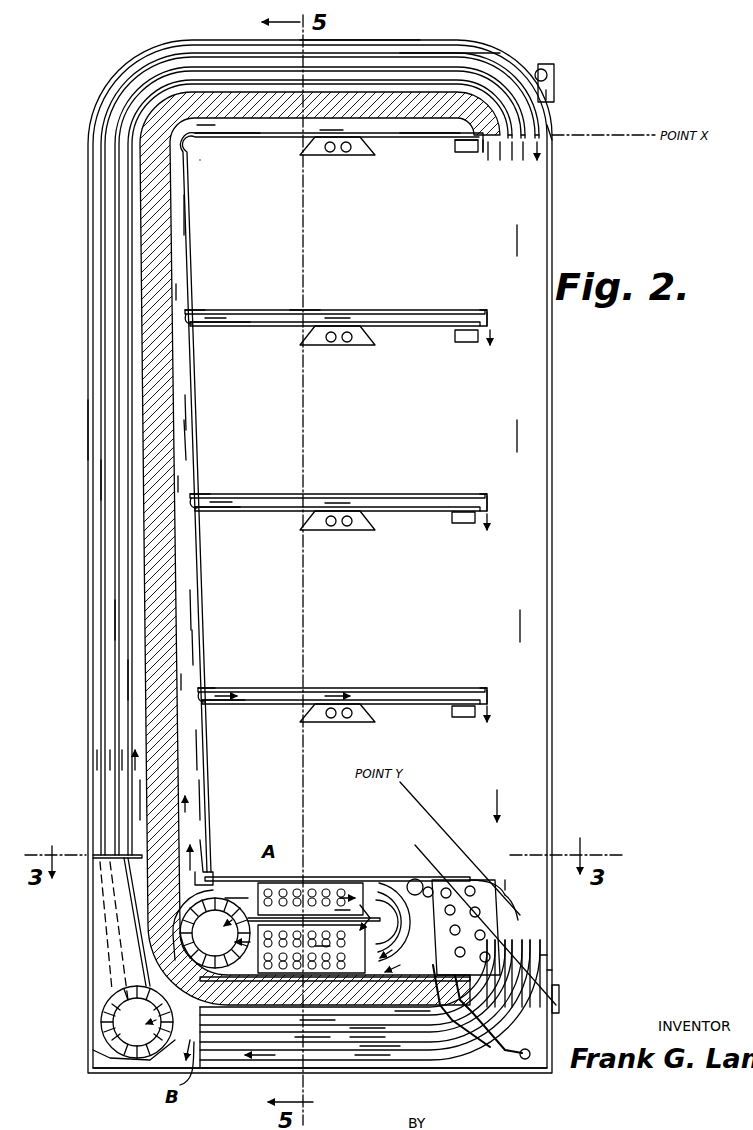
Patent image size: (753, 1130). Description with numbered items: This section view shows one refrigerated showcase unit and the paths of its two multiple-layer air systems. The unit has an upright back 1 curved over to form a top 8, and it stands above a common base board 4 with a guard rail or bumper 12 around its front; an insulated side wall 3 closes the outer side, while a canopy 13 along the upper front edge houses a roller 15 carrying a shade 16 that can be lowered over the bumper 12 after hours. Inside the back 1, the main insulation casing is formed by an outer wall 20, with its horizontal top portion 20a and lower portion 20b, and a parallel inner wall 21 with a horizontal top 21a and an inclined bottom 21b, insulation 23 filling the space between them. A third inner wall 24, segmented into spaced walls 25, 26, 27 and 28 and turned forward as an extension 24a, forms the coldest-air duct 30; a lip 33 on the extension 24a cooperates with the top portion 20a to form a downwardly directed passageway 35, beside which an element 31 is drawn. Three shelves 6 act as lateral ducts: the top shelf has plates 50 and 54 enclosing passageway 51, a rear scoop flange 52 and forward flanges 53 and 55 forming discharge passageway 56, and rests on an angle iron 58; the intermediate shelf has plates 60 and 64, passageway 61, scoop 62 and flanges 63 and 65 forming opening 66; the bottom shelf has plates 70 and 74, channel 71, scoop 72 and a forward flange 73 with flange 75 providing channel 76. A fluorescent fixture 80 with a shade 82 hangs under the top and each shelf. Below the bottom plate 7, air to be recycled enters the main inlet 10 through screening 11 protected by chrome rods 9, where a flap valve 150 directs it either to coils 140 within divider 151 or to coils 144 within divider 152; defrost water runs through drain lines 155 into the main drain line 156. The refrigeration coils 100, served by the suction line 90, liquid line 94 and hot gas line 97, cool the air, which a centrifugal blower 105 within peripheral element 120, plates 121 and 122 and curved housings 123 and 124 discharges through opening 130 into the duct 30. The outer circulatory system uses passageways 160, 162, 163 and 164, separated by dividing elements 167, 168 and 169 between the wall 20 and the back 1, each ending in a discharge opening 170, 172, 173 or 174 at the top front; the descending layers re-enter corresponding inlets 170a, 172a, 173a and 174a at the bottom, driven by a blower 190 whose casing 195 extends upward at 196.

The upright back 1 is at (92, 430).
The insulated side wall 3 is at (277, 384).
The base board 4 is at (553, 1028).
The shelves 6 is at (291, 308).
The bottom plate 7 is at (380, 905).
The top 8 is at (380, 42).
The chrome rods 9 is at (508, 890).
The main inlet 10 is at (500, 902).
The screening 11 is at (520, 962).
The guard rail or bumper 12 is at (556, 1000).
The canopy 13 is at (553, 90).
The roller 15 is at (552, 72).
The shade 16 is at (553, 100).
The outer wall 20 is at (145, 548).
The top portion of outer wall 20a is at (432, 92).
The lower portion of outer wall 20b is at (500, 950).
The inner wall 21 is at (190, 386).
The horizontal top portion of inner wall 21a is at (426, 138).
The bottom portion of inner wall 21b is at (505, 935).
The insulation 23 is at (187, 442).
The third inner wall 24 is at (202, 610).
The right-angular extension of inner wall 24a is at (217, 140).
The wall element 25 is at (187, 216).
The wall element 26 is at (193, 413).
The wall element 27 is at (196, 650).
The wall element 28 is at (200, 750).
The duct 30 is at (203, 800).
The outlet opening 31 is at (497, 150).
The lip 33 is at (466, 150).
The air passageway 35 is at (478, 153).
The upper plate 50 is at (424, 310).
The passageway 51 is at (240, 327).
The downwardly turned flange 52 is at (186, 308).
The downwardly extending flange 53 is at (489, 319).
The lower plate 54 is at (400, 327).
The upwardly extending flange 55 is at (485, 309).
The discharge passageway 56 is at (491, 336).
The angle iron support 58 is at (462, 343).
The upper plate 60 is at (380, 494).
The cold air passageway 61 is at (222, 512).
The scoop 62 is at (190, 492).
The flange 63 is at (489, 498).
The lower plate 64 is at (398, 512).
The flange 65 is at (484, 493).
The discharge opening 66 is at (489, 512).
The upper plate 70 is at (322, 688).
The cold air channel 71 is at (232, 705).
The scoop 72 is at (199, 687).
The shelf end flange 73 is at (489, 692).
The lower plate 74 is at (397, 705).
The flange 75 is at (475, 674).
The channel 76 is at (489, 708).
The fluorescent fixture 80 is at (340, 156).
The shade 82 is at (358, 346).
The suction line 90 is at (392, 905).
The liquid line 94 is at (470, 892).
The insulated hot gas line 97 is at (420, 880).
The refrigeration coils 100 is at (290, 880).
The blower 105 is at (222, 900).
The peripheral element 120 is at (230, 982).
The parallel plate 121 is at (300, 882).
The horizontal plate 122 is at (345, 925).
The curved housing 123 is at (388, 947).
The curved housing 124 is at (402, 878).
The discharge opening 130 is at (206, 842).
The coils 140 is at (478, 878).
The coils 144 is at (505, 915).
The flap valve 150 is at (490, 890).
The divider 151 is at (392, 968).
The divider 152 is at (520, 930).
The drain line 155 is at (490, 1045).
The main drain line 156 is at (525, 1060).
The passageway 160 is at (104, 482).
The passageway 162 is at (110, 617).
The passageway 163 is at (127, 684).
The passageway 164 is at (138, 797).
The dividing element 167 is at (130, 217).
The dividing element 168 is at (116, 298).
The dividing element 169 is at (104, 357).
The discharge opening 170 is at (508, 142).
The inlet 170a is at (496, 942).
The discharge opening 172 is at (525, 140).
The inlet 172a is at (510, 957).
The discharge opening 173 is at (550, 130).
The inlet 173a is at (525, 970).
The discharge opening 174 is at (540, 138).
The inlet 174a is at (530, 985).
The blower 190 is at (102, 1022).
The casing 195 is at (100, 1046).
The casing extension 196 is at (118, 906).